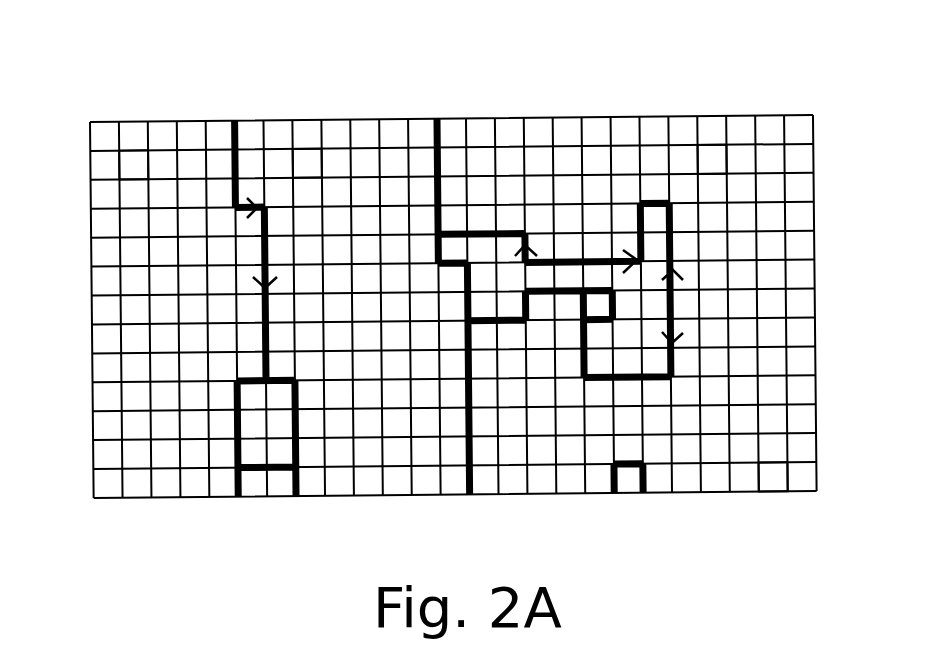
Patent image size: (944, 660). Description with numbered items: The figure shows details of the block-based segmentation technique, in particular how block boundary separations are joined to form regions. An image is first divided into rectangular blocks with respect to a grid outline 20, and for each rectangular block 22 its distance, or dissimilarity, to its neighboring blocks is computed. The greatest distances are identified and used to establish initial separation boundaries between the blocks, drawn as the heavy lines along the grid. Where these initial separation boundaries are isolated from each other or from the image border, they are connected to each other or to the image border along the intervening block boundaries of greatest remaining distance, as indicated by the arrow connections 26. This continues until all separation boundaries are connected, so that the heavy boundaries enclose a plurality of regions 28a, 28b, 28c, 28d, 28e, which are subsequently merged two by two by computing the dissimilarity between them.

The grid outline 20 is at (532, 495).
The rectangular block 22 is at (775, 493).
The arrow connections 26 is at (260, 252).
The region 28a is at (133, 167).
The region 28b is at (305, 158).
The region 28c is at (282, 452).
The region 28d is at (512, 280).
The region 28e is at (715, 153).